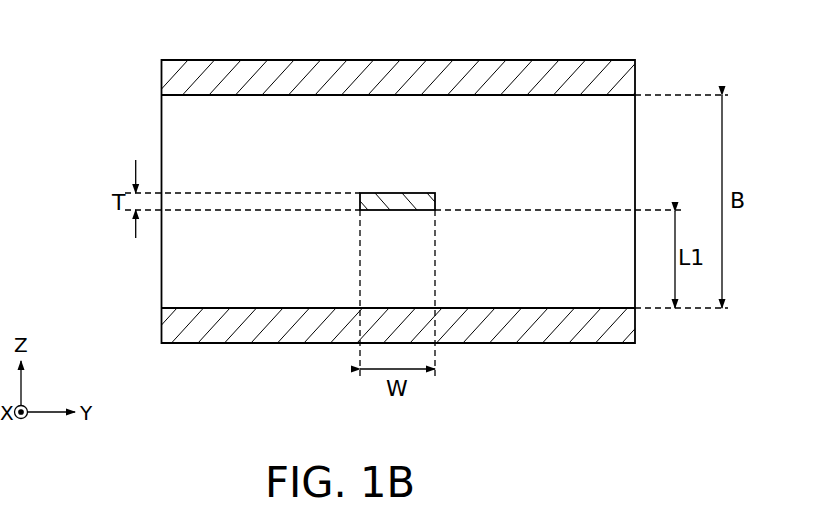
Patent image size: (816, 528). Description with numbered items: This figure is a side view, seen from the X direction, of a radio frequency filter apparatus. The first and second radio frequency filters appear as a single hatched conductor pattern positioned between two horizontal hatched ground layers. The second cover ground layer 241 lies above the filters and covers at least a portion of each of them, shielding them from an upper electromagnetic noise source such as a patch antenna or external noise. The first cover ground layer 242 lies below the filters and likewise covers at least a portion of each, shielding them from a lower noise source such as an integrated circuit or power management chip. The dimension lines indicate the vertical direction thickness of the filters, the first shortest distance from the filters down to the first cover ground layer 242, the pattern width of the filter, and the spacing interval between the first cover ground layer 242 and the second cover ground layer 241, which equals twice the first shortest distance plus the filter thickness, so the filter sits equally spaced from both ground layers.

The second cover ground layer 241 is at (168, 78).
The first cover ground layer 242 is at (168, 325).